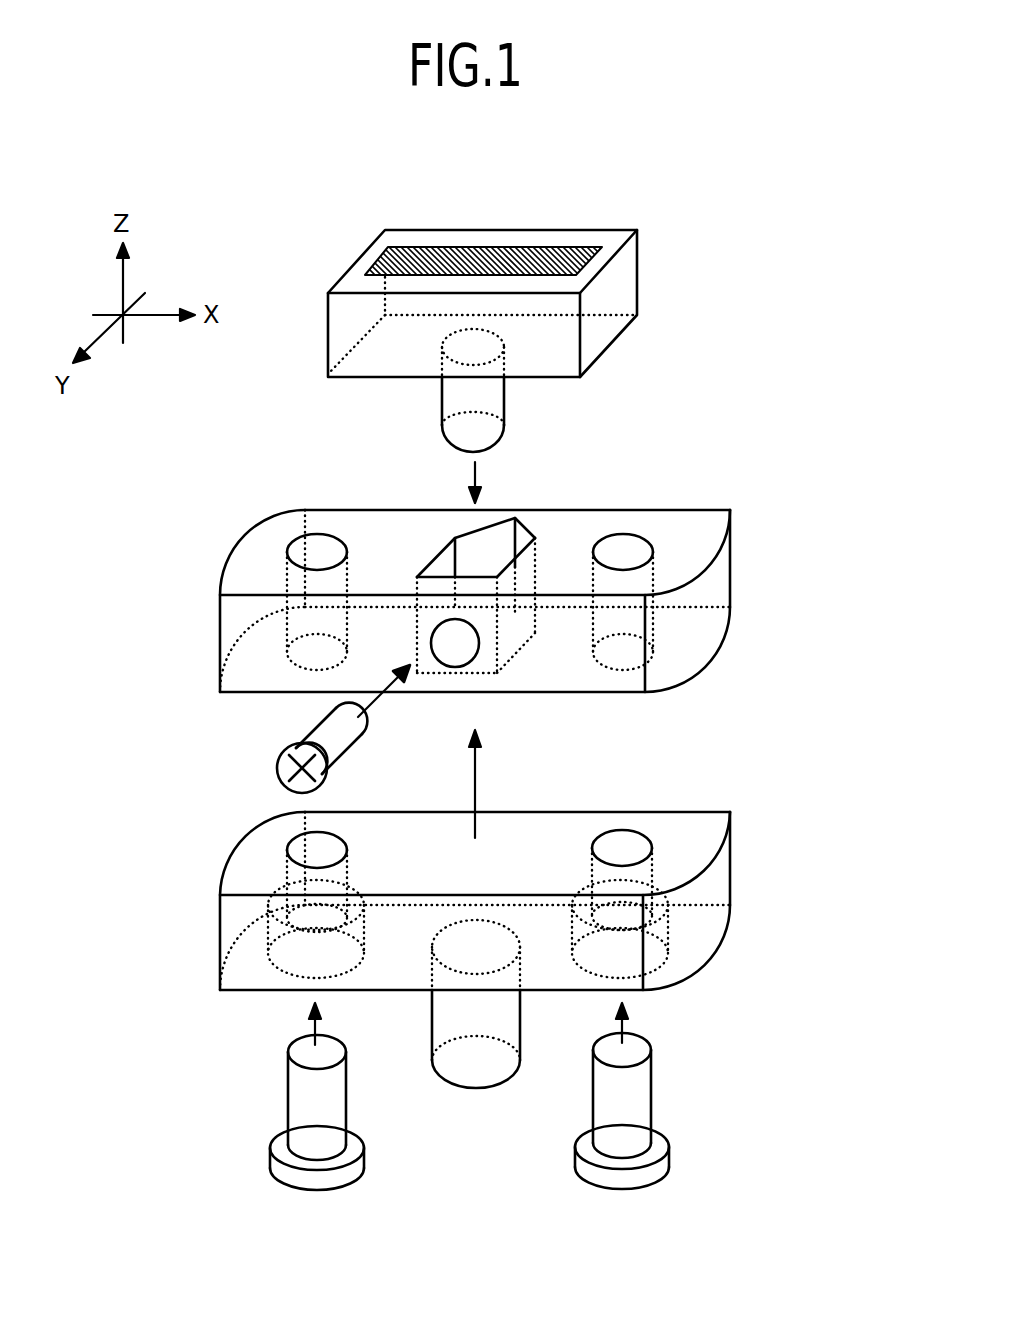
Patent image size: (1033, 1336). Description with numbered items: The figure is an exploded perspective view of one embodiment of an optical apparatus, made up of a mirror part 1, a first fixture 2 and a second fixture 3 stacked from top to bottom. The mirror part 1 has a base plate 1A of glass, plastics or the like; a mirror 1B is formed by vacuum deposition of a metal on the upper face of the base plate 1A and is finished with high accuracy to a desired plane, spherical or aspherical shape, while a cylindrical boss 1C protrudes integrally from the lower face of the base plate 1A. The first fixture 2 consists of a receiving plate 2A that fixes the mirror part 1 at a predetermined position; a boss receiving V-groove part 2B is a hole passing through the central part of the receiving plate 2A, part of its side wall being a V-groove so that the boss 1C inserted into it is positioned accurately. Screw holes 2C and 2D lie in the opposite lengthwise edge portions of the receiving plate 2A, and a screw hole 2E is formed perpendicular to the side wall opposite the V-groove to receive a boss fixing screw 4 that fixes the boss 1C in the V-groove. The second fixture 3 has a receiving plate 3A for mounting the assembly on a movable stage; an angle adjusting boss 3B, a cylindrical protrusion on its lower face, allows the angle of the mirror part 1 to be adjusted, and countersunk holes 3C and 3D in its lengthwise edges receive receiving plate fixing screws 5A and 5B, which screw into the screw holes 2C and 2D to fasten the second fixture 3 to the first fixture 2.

The mirror part 1 is at (499, 309).
The base plate 1A is at (328, 333).
The mirror 1B is at (410, 245).
The boss 1C is at (505, 405).
The first fixture 2 is at (499, 604).
The receiving plate 2A is at (218, 642).
The boss receiving V-groove part 2B is at (466, 552).
The screw hole 2C is at (317, 542).
The screw hole 2D is at (623, 542).
The screw hole 2E is at (440, 668).
The second fixture 3 is at (499, 971).
The receiving plate 3A is at (218, 942).
The angle adjusting boss 3B is at (477, 1090).
The countersunk hole 3C is at (323, 840).
The countersunk hole 3D is at (620, 840).
The boss fixing screw 4 is at (277, 765).
The receiving plate fixing screw 5A is at (285, 1105).
The receiving plate fixing screw 5B is at (653, 1095).